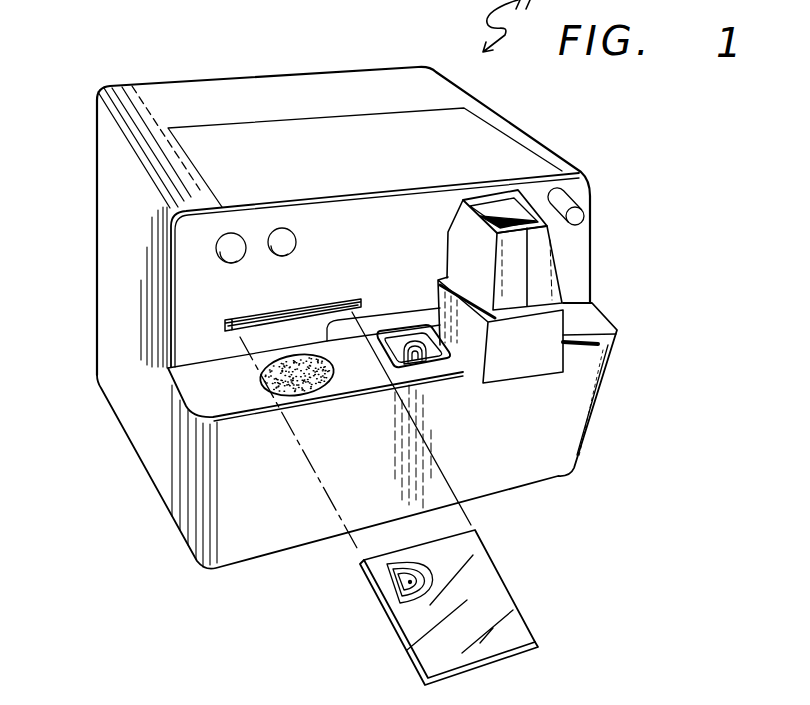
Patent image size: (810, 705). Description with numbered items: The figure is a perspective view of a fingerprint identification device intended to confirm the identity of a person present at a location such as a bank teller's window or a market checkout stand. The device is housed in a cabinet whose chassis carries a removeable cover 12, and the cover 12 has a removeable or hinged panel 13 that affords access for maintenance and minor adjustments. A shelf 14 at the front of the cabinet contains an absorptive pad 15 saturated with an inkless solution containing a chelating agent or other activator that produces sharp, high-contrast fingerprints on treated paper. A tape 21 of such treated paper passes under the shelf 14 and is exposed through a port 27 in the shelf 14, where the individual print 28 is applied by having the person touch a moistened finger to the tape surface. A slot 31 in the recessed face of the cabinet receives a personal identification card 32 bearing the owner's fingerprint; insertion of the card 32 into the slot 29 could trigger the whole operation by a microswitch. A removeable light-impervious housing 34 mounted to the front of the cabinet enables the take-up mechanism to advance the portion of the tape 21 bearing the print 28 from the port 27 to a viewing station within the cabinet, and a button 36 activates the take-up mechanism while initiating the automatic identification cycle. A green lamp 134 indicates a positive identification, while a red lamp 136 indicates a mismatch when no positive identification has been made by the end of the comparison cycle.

The removeable cover 12 is at (383, 78).
The panel 13 is at (483, 140).
The shelf 14 is at (315, 364).
The absorptive pad 15 is at (288, 381).
The tape 21 is at (418, 368).
The port 27 is at (455, 360).
The individual print 28 is at (435, 366).
The slot 29 is at (255, 320).
The slot 31 is at (449, 607).
The personal identification card 32 is at (390, 584).
The light-impervious housing 34 is at (543, 283).
The button 36 is at (580, 218).
The green lamp 134 is at (271, 232).
The red lamp 136 is at (220, 239).